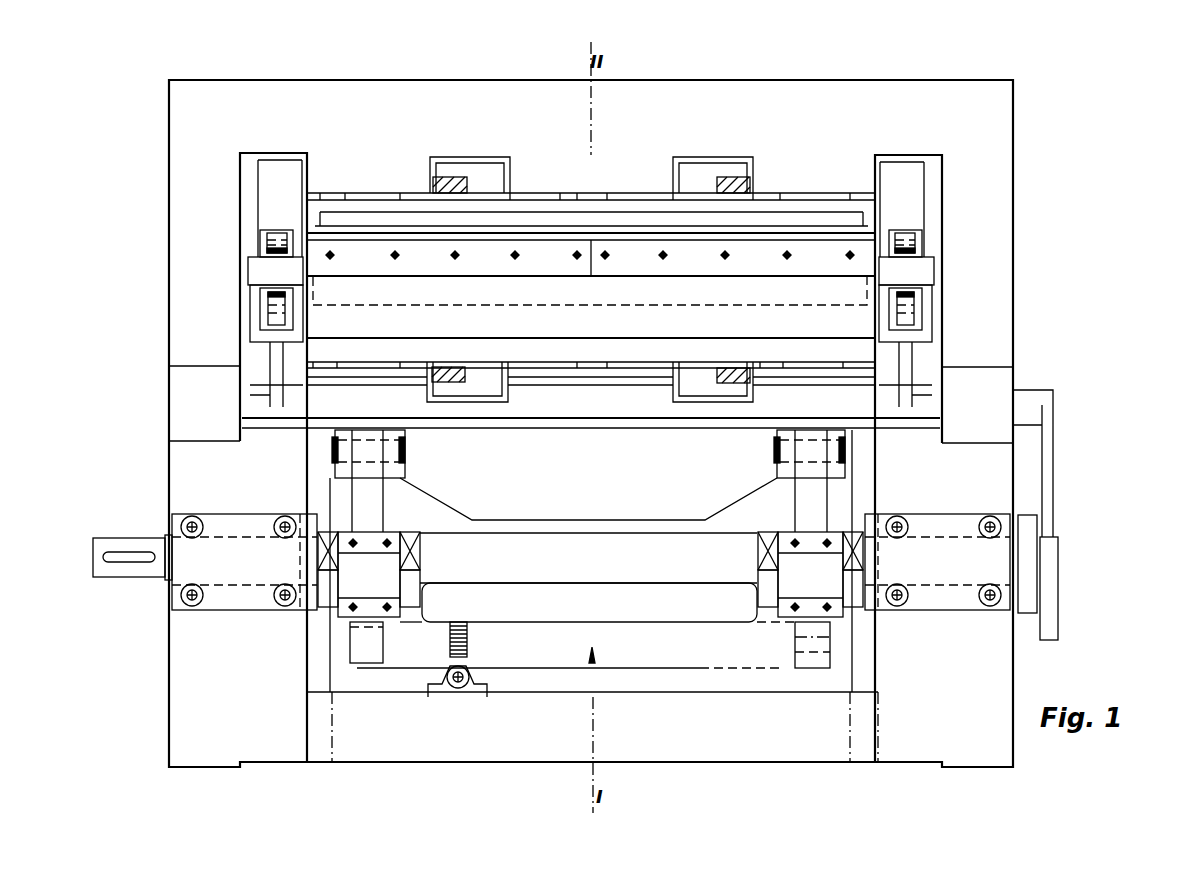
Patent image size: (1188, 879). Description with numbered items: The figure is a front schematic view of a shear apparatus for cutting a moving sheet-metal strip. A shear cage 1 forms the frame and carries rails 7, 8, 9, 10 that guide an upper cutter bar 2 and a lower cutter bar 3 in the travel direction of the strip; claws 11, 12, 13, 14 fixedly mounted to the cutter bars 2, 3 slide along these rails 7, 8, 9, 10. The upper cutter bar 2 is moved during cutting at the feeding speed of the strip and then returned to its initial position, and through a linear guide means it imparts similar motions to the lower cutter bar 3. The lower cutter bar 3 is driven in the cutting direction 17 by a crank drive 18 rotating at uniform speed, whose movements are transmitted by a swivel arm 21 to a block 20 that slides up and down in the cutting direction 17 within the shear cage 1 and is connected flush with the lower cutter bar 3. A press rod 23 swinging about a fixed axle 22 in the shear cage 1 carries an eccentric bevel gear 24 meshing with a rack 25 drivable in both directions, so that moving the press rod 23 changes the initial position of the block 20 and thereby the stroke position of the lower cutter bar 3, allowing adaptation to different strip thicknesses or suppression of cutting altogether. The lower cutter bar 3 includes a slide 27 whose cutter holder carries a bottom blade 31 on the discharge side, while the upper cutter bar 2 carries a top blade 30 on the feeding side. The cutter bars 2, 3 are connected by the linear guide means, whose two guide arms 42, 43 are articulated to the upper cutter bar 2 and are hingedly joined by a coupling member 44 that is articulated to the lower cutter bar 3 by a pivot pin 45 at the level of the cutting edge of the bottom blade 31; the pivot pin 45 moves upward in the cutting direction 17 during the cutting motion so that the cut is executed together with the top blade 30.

The shear cage 1 is at (257, 128).
The upper cutter bar 2 is at (347, 265).
The lower cutter bar 3 is at (390, 330).
The rail 7 is at (738, 188).
The rail 8 is at (442, 185).
The rail 9 is at (880, 375).
The rail 10 is at (430, 397).
The claw 11 is at (688, 177).
The claw 12 is at (494, 178).
The claw 13 is at (905, 403).
The claw 14 is at (493, 385).
The cutting direction 17 is at (594, 663).
The crank drive 18 is at (805, 578).
The block 20 is at (602, 497).
The swivel arm 21 is at (805, 490).
The fixed axle 22 is at (838, 638).
The press rod 23 is at (368, 658).
The eccentric bevel gear 24 is at (437, 690).
The rack 25 is at (472, 690).
The slide 27 is at (903, 417).
The top blade 30 is at (558, 275).
The bottom blade 31 is at (623, 278).
The guide arm 42 is at (265, 232).
The guide arm 43 is at (250, 322).
The coupling member 44 is at (273, 317).
The pivot pin 45 is at (268, 275).